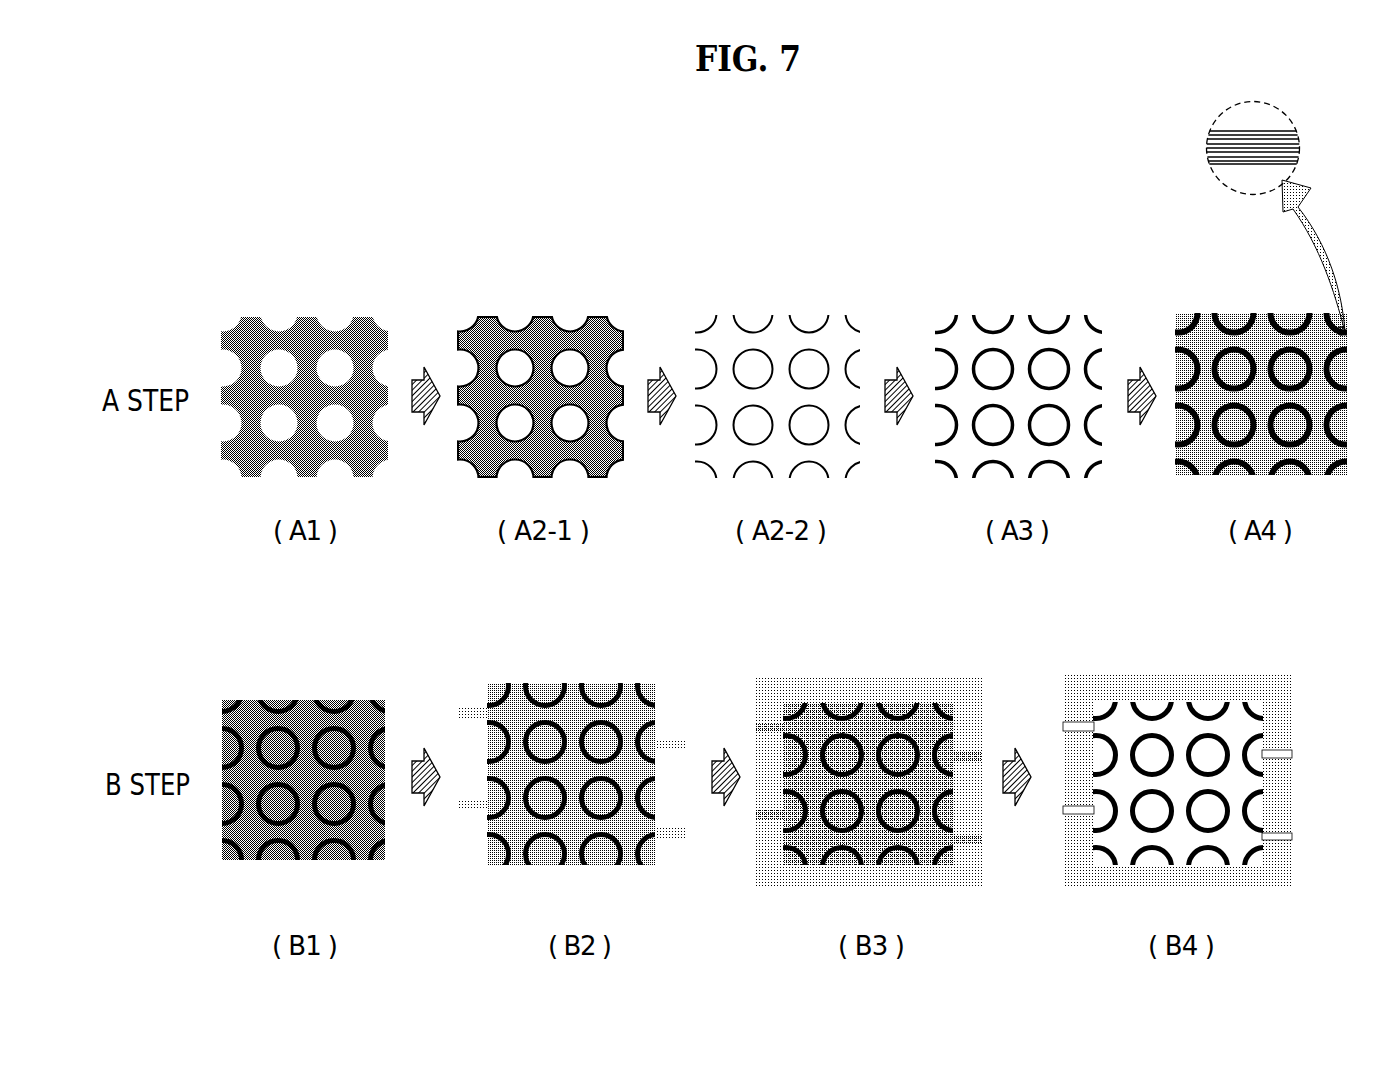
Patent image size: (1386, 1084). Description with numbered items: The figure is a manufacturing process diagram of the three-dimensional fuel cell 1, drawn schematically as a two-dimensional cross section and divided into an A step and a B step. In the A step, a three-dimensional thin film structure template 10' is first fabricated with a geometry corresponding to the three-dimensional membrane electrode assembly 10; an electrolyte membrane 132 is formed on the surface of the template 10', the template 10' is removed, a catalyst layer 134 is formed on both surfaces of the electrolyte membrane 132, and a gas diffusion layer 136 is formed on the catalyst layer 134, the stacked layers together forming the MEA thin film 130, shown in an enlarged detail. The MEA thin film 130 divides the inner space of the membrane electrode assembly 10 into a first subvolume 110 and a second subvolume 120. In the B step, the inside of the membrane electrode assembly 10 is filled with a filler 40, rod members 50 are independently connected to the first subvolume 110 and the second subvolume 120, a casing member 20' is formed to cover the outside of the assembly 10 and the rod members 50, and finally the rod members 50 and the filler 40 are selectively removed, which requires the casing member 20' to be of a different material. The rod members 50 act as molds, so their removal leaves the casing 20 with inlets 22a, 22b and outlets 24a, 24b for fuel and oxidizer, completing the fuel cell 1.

The three-dimensional thin film structure template 10' is at (424, 373).
The three-dimensional membrane electrode assembly 10 is at (706, 566).
The first subvolume 110 is at (723, 343).
The second subvolume 120 is at (752, 367).
The MEA thin film 130 is at (1200, 333).
The electrolyte membrane 132 is at (562, 324).
The catalyst layer 134 is at (1068, 353).
The gas diffusion layer 136 is at (1205, 132).
The filler 40 is at (253, 705).
The rod members 50 is at (680, 738).
The casing member 20' is at (874, 816).
The casing 20 is at (1181, 819).
The inlet 22a is at (1062, 727).
The outlet 24a is at (1062, 812).
The inlet 22b is at (1283, 752).
The outlet 24b is at (1283, 835).
The fuel cell 1 is at (1181, 794).